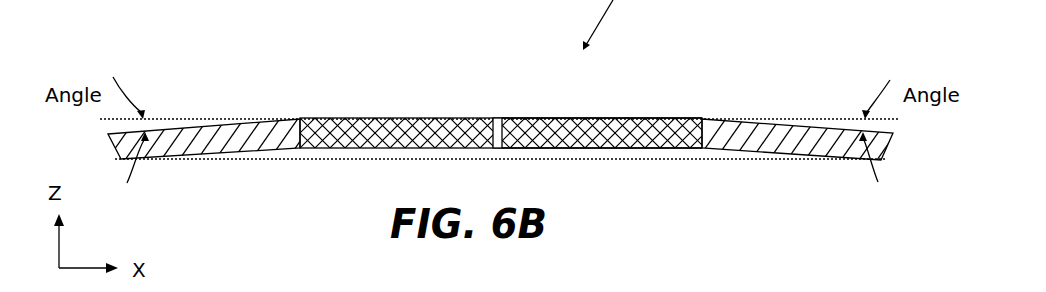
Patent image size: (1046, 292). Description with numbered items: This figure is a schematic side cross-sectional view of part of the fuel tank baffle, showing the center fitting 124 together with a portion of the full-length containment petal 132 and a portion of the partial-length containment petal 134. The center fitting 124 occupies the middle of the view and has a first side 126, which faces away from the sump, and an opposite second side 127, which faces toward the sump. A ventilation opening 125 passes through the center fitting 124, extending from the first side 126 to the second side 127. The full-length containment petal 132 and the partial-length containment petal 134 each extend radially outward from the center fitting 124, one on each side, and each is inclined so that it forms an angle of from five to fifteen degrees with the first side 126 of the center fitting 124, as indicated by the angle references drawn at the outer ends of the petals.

The center fitting 124 is at (583, 127).
The ventilation opening 125 is at (500, 112).
The first side 126 is at (660, 111).
The second side 127 is at (674, 158).
The full-length containment petal 132 is at (772, 118).
The partial-length containment petal 134 is at (230, 146).